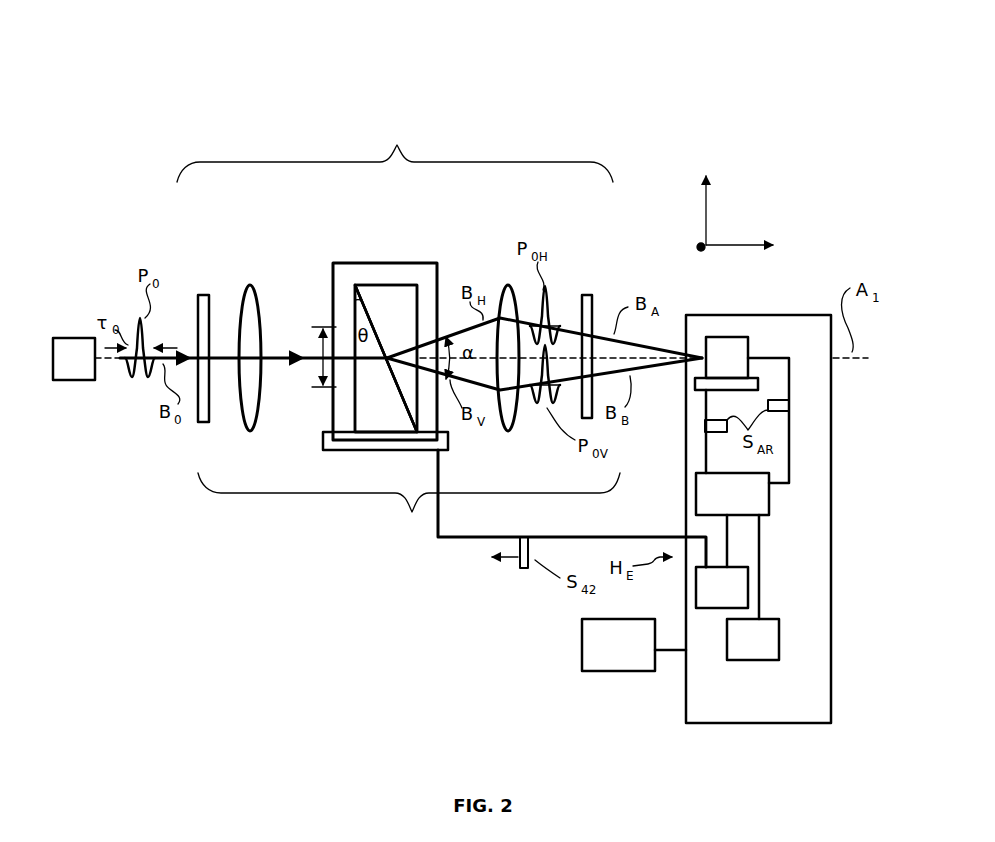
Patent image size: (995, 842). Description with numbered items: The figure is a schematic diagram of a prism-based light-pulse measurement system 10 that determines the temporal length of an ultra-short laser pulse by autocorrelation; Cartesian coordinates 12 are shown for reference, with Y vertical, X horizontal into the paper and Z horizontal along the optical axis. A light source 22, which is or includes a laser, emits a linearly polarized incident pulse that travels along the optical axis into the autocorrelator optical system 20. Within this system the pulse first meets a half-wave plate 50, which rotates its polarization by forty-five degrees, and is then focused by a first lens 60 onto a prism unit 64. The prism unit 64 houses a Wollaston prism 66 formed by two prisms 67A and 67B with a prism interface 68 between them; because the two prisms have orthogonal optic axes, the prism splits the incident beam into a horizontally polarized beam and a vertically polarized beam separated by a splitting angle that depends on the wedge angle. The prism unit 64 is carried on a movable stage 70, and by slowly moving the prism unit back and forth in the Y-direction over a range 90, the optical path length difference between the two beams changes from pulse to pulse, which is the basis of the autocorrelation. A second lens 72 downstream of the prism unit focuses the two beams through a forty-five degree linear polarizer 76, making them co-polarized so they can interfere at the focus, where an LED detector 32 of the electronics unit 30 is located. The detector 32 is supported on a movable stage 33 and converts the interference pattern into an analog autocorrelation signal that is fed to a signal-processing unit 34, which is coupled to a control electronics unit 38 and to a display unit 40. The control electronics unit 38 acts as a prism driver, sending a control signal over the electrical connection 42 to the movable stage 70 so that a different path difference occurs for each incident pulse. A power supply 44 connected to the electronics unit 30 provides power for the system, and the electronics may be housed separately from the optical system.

The light-pulse measurement system 10 is at (216, 62).
The Cartesian coordinates 12 is at (762, 188).
The autocorrelator optical system 20 is at (398, 317).
The light source 22 is at (74, 359).
The electronics unit 30 is at (758, 519).
The LED detector 32 is at (747, 410).
The movable stage 33 is at (758, 384).
The signal-processing unit 34 is at (732, 494).
The control electronics unit 38 is at (722, 587).
The display unit 40 is at (753, 639).
The electrical connection 42 is at (433, 523).
The power supply 44 is at (634, 645).
The half-wave plate 50 is at (197, 294).
The first lens 60 is at (242, 290).
The prism unit 64 is at (350, 248).
The Wollaston prism 66 is at (382, 284).
The prism 67A is at (375, 410).
The prism 67B is at (405, 297).
The prism interface 68 is at (378, 326).
The movable stage 70 is at (322, 443).
The second lens 72 is at (509, 432).
The 45° linear polarizer 76 is at (585, 294).
The range 90 is at (318, 384).